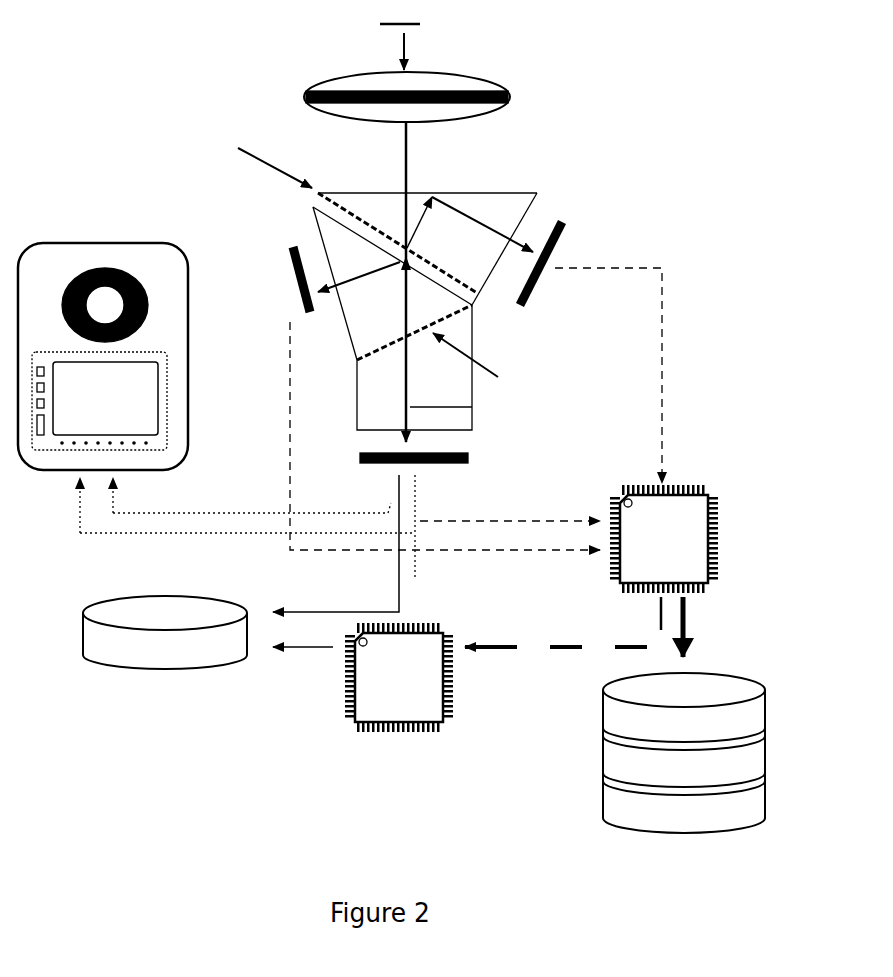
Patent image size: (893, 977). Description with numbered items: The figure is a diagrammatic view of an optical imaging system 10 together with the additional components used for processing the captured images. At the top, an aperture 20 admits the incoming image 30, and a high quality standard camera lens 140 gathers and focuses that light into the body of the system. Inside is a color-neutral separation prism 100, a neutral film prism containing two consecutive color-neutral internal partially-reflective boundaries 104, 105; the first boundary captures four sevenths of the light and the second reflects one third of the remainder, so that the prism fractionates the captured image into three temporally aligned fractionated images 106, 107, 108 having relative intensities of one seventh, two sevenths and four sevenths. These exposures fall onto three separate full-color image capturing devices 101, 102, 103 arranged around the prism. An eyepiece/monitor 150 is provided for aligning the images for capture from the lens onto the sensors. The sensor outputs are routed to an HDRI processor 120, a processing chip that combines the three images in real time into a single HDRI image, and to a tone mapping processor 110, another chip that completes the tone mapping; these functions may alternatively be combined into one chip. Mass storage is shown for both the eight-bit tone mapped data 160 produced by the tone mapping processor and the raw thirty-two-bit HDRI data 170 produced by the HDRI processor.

The optical imaging system 10 is at (132, 817).
The aperture 20 is at (426, 22).
The incoming image 30 is at (410, 50).
The color-neutral separation prism 100 is at (467, 188).
The image capturing device 101 is at (290, 298).
The image capturing device 102 is at (472, 458).
The image capturing device 103 is at (567, 235).
The color-neutral internal partially-reflective boundary 104 is at (255, 160).
The color-neutral internal partially-reflective boundary 105 is at (489, 362).
The fractionated image 106 is at (358, 282).
The fractionated image 107 is at (472, 407).
The fractionated image 108 is at (470, 228).
The tone mapping processor 110 is at (393, 737).
The HDRI processor 120 is at (725, 512).
The optical imaging system lens 140 is at (307, 87).
The eyepiece/monitor 150 is at (152, 237).
The 8-bit tone mapped data 160 is at (198, 680).
The 32-bit HDRI data 170 is at (685, 842).